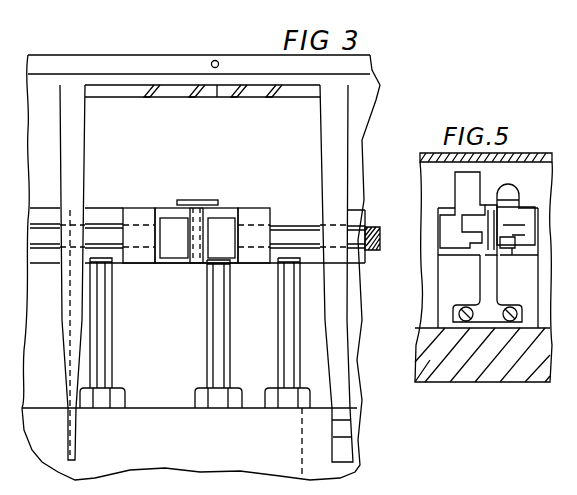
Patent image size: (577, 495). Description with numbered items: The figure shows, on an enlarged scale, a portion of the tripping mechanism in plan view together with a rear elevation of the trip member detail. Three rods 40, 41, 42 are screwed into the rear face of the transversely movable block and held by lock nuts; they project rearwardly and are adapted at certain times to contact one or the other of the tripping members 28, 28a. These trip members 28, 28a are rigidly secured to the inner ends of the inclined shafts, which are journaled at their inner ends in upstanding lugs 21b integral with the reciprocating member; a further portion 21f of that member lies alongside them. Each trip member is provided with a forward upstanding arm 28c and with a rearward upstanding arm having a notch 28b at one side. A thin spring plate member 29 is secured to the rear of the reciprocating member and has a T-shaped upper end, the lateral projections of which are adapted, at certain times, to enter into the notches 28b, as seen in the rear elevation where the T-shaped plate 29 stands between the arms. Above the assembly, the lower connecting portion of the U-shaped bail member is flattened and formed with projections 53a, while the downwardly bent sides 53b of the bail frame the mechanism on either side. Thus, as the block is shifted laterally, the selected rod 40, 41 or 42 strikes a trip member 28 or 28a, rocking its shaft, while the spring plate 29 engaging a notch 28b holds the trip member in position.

In FIG. 3, the side post 53b is at (72, 128).
In FIG. 3, the projections 53a is at (152, 97).
In FIG. 3, the forward upstanding arm 28c is at (60, 209).
In FIG. 3, the bearing block 21f is at (133, 210).
In FIG. 3, the upstanding lugs 21b is at (253, 218).
In FIG. 3, the trip member 28 is at (176, 232).
In FIG. 5, the trip member 28 is at (460, 188).
In FIG. 3, the trip member 28a is at (218, 235).
In FIG. 5, the trip member 28a is at (515, 232).
In FIG. 5, the notch 28b is at (470, 208).
In FIG. 3, the thin spring plate member 29 is at (30, 284).
In FIG. 5, the thin spring plate member 29 is at (488, 279).
In FIG. 3, the rod 40 is at (106, 298).
In FIG. 3, the rod 41 is at (210, 346).
In FIG. 3, the rod 42 is at (284, 358).